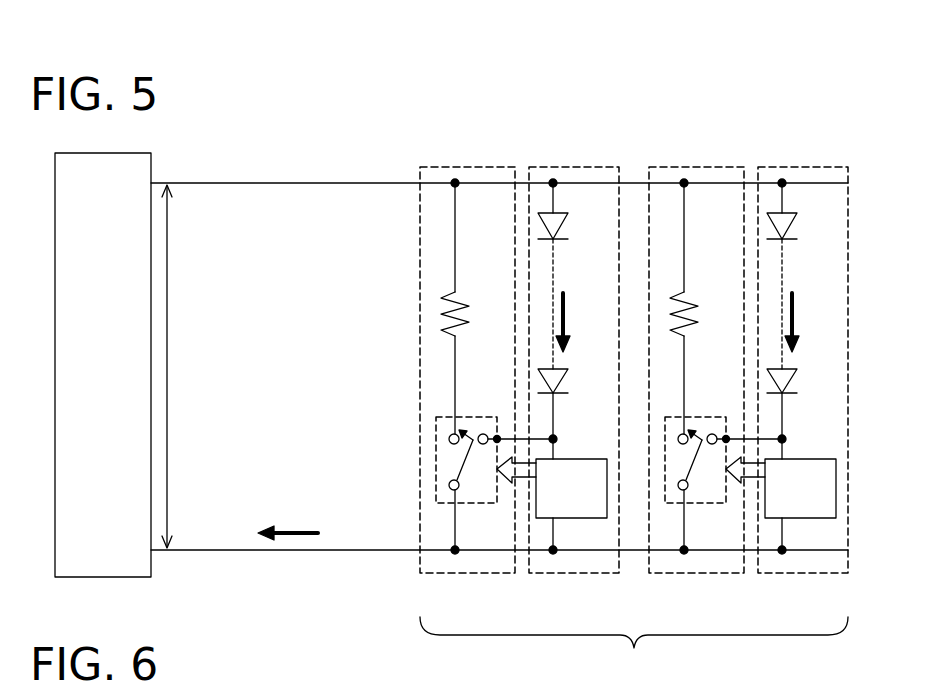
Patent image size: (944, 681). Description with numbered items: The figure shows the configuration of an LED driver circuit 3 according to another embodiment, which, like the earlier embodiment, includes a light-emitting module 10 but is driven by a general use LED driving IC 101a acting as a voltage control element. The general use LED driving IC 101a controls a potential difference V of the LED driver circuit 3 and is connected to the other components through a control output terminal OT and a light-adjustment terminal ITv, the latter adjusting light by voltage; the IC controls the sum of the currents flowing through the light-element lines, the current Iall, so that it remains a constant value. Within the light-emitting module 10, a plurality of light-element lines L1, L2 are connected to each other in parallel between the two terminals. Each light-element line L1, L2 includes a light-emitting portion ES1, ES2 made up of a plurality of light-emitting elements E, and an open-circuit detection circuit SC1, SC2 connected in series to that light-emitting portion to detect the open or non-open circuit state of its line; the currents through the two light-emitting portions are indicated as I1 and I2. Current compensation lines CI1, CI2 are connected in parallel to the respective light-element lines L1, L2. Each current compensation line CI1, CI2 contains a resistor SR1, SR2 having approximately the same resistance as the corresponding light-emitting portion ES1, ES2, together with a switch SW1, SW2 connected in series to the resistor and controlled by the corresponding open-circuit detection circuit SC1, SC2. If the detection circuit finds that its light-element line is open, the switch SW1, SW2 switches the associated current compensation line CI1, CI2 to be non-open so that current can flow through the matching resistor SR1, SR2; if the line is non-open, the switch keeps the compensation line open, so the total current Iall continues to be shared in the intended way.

The LED driver circuit 3 is at (427, 113).
The light-emitting module 10 is at (634, 648).
The general use LED driving IC 101a is at (100, 578).
The control output terminal OT is at (480, 182).
The light-adjustment terminal ITv is at (477, 549).
The potential difference V is at (175, 366).
The current Iall is at (288, 522).
The current compensation line CI1 is at (466, 575).
The current compensation line CI2 is at (696, 397).
The light-element line L1 is at (572, 575).
The light-element line L2 is at (803, 397).
The resistor SR1 is at (458, 302).
The resistor SR2 is at (699, 295).
The switch SW1 is at (474, 416).
The switch SW2 is at (723, 438).
The open-circuit detection circuit SC1 is at (560, 458).
The open-circuit detection circuit SC2 is at (783, 478).
The light-emitting element E is at (556, 233).
The light-emitting portion ES1 is at (585, 215).
The light-emitting portion ES2 is at (819, 305).
The current 1 I1 is at (571, 322).
The current 2 I2 is at (800, 322).